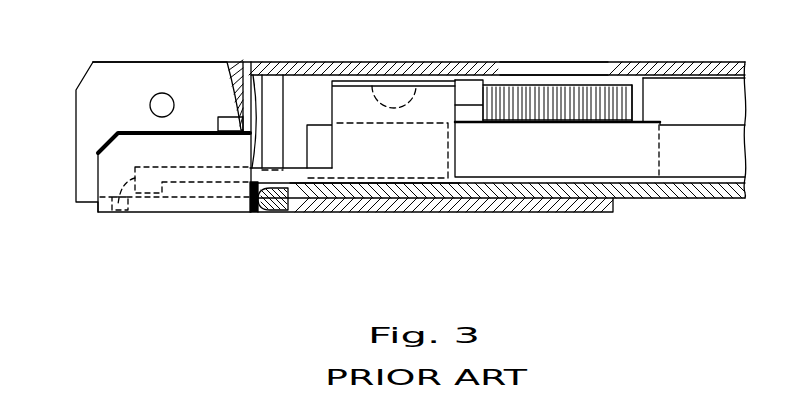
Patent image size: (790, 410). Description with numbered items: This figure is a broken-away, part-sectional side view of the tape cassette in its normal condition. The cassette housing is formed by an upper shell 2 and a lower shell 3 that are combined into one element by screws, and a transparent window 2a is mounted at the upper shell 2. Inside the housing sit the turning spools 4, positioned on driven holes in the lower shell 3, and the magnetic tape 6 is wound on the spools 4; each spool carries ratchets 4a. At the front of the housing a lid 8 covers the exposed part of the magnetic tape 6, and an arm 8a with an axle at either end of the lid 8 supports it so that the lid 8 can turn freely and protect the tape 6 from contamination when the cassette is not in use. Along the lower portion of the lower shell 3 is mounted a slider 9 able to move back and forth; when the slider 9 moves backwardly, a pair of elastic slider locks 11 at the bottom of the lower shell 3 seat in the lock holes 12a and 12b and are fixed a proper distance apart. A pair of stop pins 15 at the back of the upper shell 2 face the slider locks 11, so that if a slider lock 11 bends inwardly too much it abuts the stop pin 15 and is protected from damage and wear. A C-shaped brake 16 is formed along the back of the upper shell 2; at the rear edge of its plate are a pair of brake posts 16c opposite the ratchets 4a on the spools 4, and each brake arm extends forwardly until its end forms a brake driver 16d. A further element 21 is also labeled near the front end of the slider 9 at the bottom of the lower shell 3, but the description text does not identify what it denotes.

The upper shell 2 is at (449, 60).
The transparent window 2a is at (592, 68).
The lower shell 3 is at (640, 198).
The turning spools 4 is at (644, 83).
The ratchets 4a is at (563, 88).
The magnetic tape 6 is at (713, 167).
The lid 8 is at (75, 120).
The arm 8a is at (188, 73).
The slider 9 is at (472, 212).
The slider locks 11 is at (362, 193).
The lock hole 12a is at (257, 212).
The lock hole 12b is at (133, 208).
The stop pins 15 is at (275, 100).
The brake 16 is at (428, 98).
The brake portions or posts 16c is at (468, 97).
The brake driver 16d is at (127, 210).
The seal ring 21 is at (278, 212).